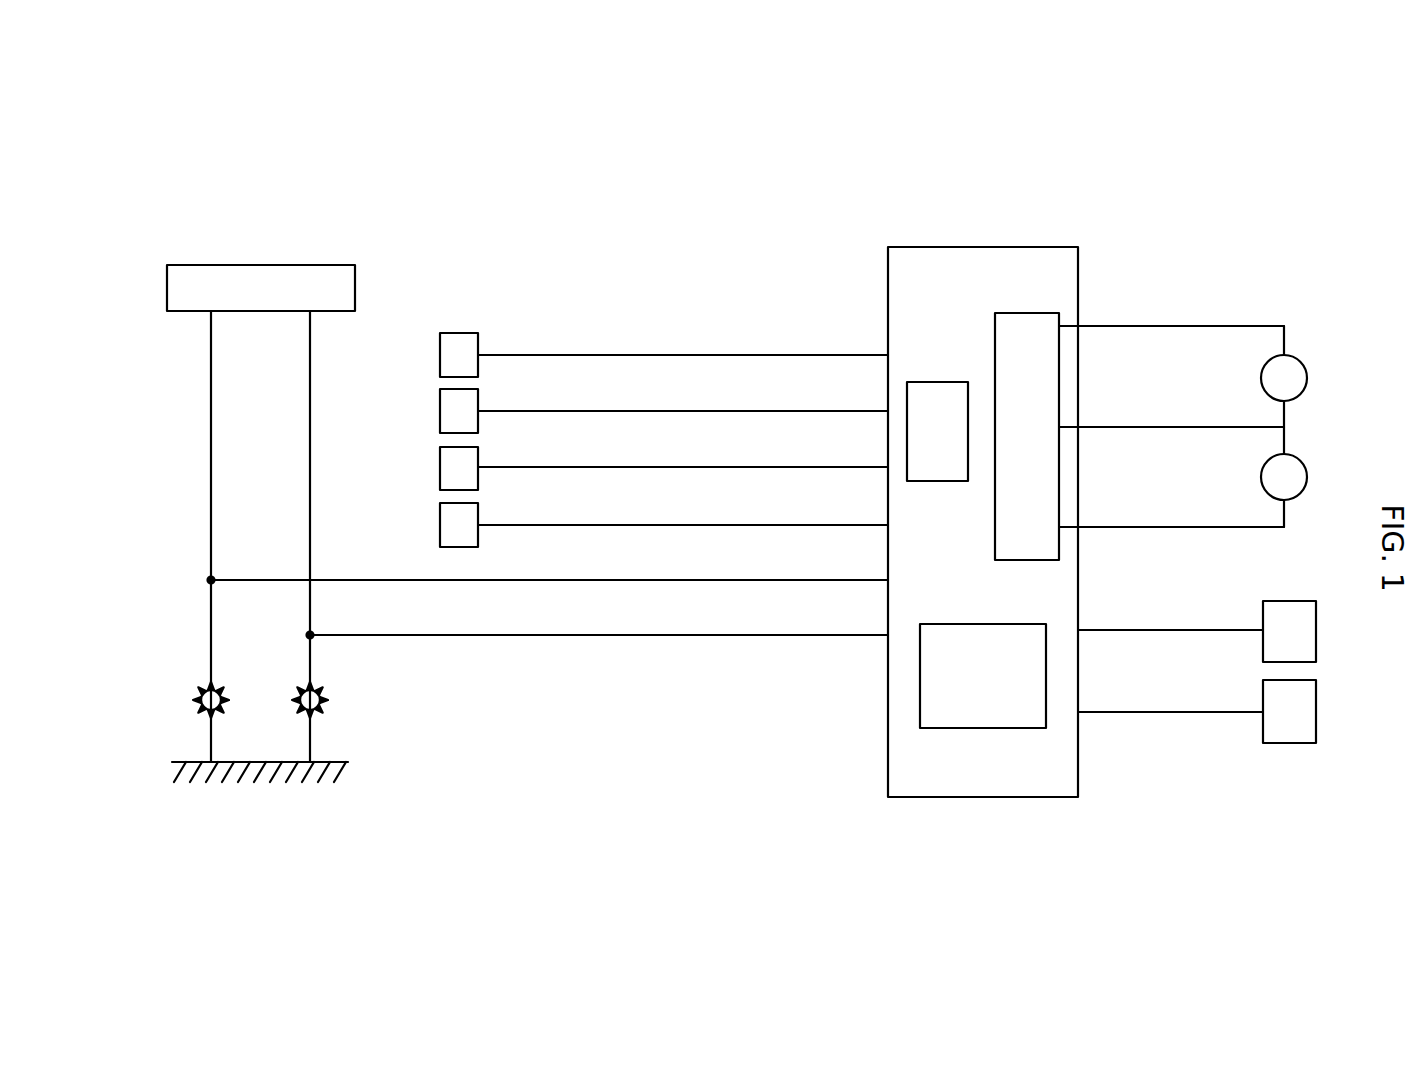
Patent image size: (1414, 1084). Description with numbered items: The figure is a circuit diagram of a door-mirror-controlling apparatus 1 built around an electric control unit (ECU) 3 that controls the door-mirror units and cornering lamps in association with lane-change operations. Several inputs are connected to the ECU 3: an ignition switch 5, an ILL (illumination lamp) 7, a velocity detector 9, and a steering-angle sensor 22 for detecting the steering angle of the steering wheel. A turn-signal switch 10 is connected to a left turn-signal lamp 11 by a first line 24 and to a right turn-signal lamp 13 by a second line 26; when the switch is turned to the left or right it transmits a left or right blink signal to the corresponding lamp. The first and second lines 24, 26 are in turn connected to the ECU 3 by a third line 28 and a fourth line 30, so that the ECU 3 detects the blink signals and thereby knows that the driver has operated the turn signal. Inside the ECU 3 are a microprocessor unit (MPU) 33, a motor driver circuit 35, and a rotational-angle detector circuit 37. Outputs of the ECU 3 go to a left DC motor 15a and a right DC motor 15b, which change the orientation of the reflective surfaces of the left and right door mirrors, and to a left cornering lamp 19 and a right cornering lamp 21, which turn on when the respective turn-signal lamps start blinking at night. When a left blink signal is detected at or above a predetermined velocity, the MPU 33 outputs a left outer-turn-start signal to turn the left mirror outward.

The door-mirror-controlling apparatus 1 is at (525, 272).
The electric control unit (ECU) 3 is at (884, 293).
The ignition switch 5 is at (439, 355).
The ILL (illumination lamp) 7 is at (439, 411).
The velocity detector 9 is at (439, 467).
The turn-signal switch 10 is at (258, 265).
The left turn-signal lamp 11 is at (222, 696).
The right turn-signal lamp 13 is at (320, 696).
The left direct-current (DC) motor 15a is at (1261, 378).
The right direct-current (DC) motor 15b is at (1261, 477).
The left cornering lamp 19 is at (1263, 611).
The right cornering lamp 21 is at (1263, 691).
The steering-angle sensor 22 is at (439, 524).
The first line 24 is at (210, 437).
The second line 26 is at (312, 437).
The third line 28 is at (611, 580).
The fourth line 30 is at (611, 635).
The microprocessor unit (MPU) 33 is at (939, 382).
The motor driver circuit 35 is at (1025, 313).
The rotational-angle detector circuit 37 is at (985, 728).